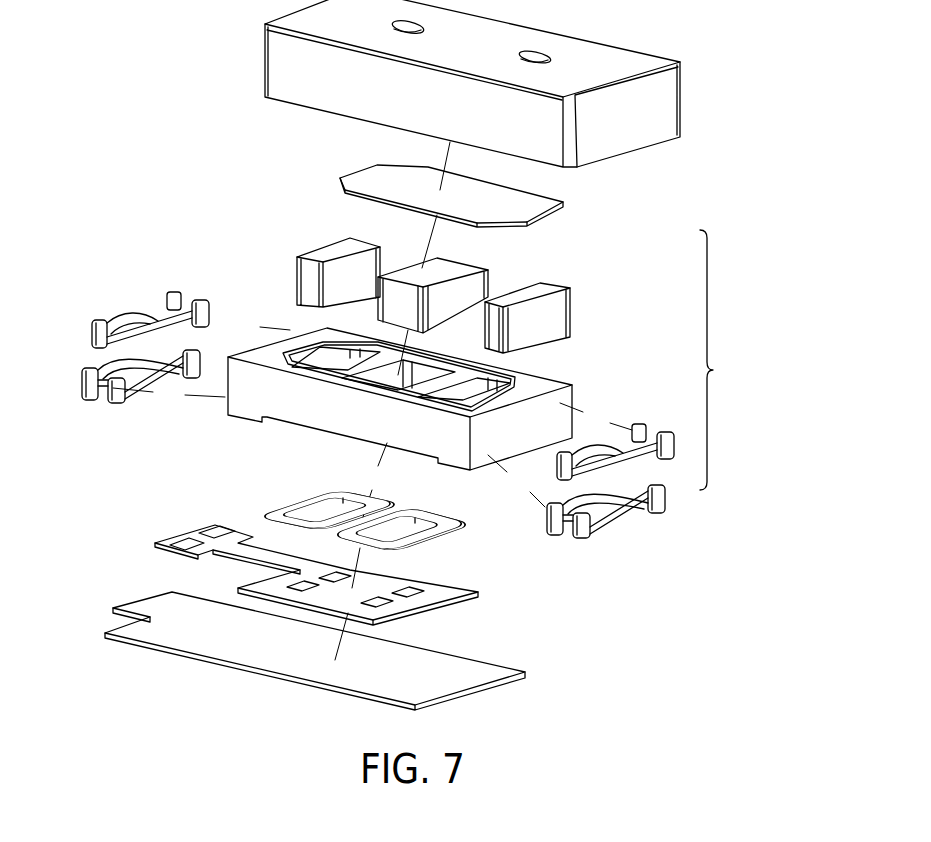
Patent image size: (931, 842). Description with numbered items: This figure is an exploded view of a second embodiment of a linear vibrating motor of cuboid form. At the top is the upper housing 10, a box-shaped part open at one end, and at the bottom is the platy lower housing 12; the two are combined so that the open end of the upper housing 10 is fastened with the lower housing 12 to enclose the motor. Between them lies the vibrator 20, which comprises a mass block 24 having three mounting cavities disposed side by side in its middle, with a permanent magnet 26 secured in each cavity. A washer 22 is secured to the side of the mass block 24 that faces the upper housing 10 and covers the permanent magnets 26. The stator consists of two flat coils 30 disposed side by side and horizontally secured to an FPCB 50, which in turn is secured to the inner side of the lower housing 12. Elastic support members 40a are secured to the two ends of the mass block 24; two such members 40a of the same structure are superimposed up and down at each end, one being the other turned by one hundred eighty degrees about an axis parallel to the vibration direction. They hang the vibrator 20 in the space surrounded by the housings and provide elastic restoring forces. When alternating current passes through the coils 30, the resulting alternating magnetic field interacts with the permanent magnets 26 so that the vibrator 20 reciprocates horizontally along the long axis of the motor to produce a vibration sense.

The upper housing 10 is at (665, 113).
The lower housing 12 is at (522, 675).
The vibrator 20 is at (725, 360).
The washer 22 is at (553, 208).
The mass block 24 is at (573, 398).
The permanent magnet 26 is at (555, 317).
The coil 30 is at (423, 532).
The elastic support member 40a is at (628, 543).
The FPCB 50 is at (467, 588).